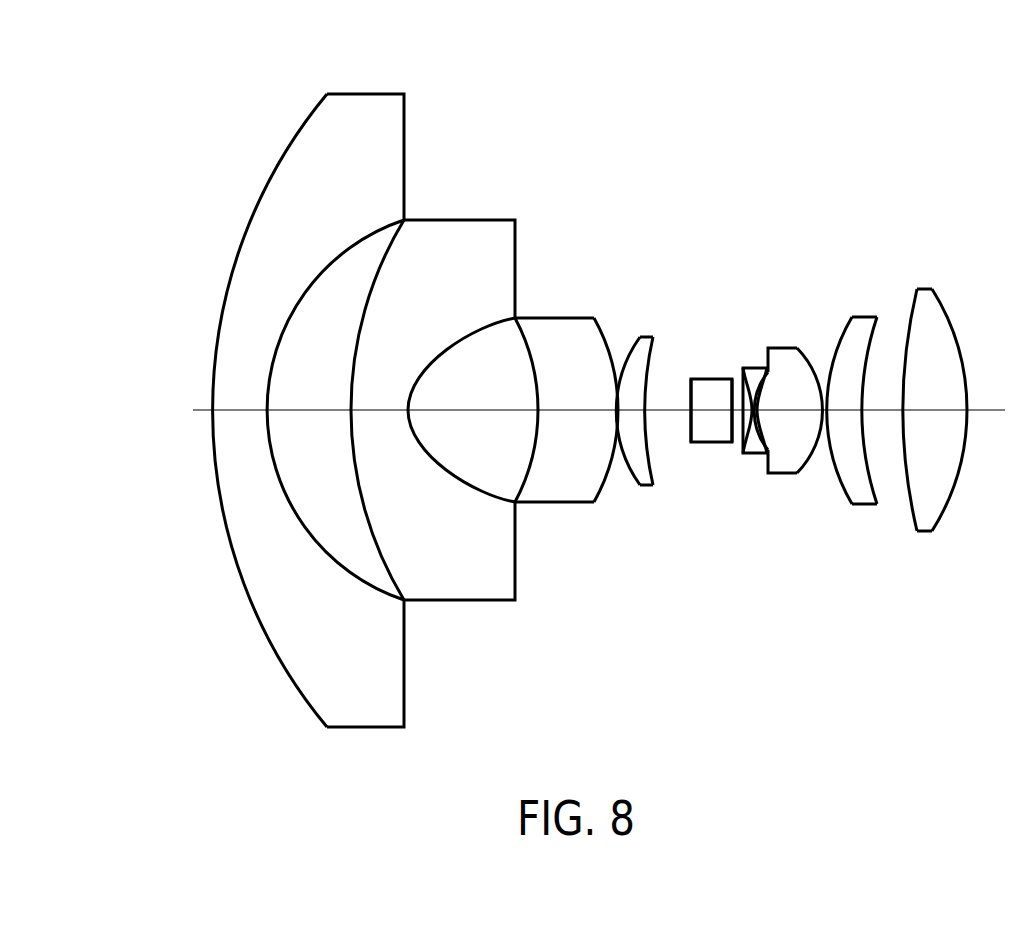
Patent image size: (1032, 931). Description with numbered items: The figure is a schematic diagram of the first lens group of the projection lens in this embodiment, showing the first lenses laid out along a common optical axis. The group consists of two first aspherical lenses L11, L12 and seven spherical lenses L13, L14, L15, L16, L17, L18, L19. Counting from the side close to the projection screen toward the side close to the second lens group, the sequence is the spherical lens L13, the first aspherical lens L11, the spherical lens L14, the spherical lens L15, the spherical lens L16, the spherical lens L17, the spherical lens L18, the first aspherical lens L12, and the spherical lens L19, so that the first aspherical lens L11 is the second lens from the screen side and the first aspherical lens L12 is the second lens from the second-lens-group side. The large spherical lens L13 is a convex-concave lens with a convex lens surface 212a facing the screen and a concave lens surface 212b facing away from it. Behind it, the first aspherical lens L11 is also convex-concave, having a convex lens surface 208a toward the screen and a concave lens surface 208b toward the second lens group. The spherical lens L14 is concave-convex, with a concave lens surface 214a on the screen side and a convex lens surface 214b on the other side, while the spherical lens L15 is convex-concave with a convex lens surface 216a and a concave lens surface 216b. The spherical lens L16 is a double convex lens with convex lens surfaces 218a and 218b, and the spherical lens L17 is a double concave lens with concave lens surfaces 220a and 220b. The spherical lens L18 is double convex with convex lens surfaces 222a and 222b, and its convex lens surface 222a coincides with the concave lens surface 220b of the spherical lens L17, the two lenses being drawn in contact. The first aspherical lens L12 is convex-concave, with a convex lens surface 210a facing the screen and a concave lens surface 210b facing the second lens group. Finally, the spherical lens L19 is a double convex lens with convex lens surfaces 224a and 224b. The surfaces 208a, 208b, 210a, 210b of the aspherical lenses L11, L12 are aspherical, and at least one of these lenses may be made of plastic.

The spherical lens L13 is at (341, 375).
The convex lens surface 212a is at (273, 175).
The concave lens surface 212b is at (338, 262).
The first aspherical lens L11 is at (341, 415).
The convex lens surface 208a is at (363, 323).
The concave lens surface 208b is at (460, 343).
The spherical lens L14 is at (561, 405).
The concave lens surface 214a is at (520, 330).
The convex lens surface 214b is at (604, 323).
The spherical lens L15 is at (654, 409).
The convex lens surface 216a is at (637, 345).
The concave lens surface 216b is at (654, 338).
The spherical lens L16 is at (703, 394).
The convex lens surface 218a is at (690, 379).
The convex lens surface 218b is at (735, 378).
The spherical lens L17 is at (740, 400).
The concave lens surface 220a is at (740, 453).
The concave lens surface 220b is at (760, 455).
The spherical lens L18 is at (791, 391).
The convex lens surface 222a is at (775, 370).
The convex lens surface 222b is at (803, 350).
The first aspherical lens L12 is at (868, 385).
The convex lens surface 210a is at (848, 317).
The concave lens surface 210b is at (878, 325).
The spherical lens L19 is at (961, 418).
The convex lens surface 224a is at (917, 289).
The convex lens surface 224b is at (943, 303).